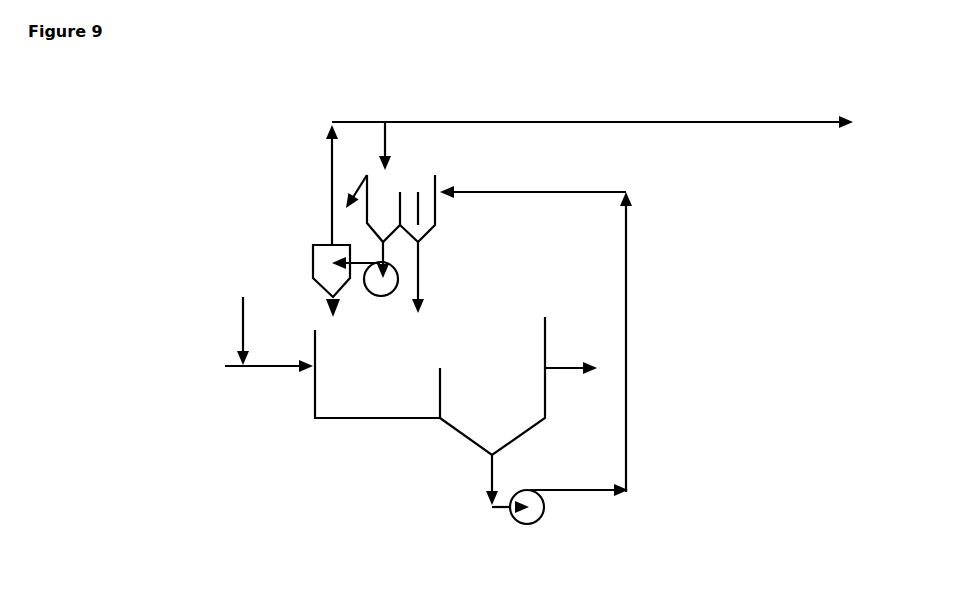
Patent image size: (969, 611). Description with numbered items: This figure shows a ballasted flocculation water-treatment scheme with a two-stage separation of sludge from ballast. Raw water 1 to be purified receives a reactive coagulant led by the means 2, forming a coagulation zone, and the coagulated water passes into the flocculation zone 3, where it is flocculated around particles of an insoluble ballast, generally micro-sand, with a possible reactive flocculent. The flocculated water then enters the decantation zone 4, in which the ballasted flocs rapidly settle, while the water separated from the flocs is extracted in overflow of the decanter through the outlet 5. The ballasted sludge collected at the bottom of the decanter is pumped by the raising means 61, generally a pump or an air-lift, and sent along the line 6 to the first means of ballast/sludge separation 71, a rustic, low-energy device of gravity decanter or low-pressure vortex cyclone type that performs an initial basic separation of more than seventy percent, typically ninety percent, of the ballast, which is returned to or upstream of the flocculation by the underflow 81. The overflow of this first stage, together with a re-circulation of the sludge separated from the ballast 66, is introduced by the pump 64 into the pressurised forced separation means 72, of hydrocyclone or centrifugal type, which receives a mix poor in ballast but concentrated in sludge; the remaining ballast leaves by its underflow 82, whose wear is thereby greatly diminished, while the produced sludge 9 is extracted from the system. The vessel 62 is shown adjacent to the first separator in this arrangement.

The raw water intake 1 is at (246, 391).
The coagulant feed means 2 is at (214, 324).
The flocculation zone 3 is at (377, 374).
The decantation zone 4 is at (492, 386).
The overflow outlet 5 is at (580, 345).
The recycle line 6 is at (570, 341).
The produced sludge 9 is at (592, 100).
The raising means 61 is at (533, 516).
The first separation vessel 62 is at (383, 192).
The pump 64 is at (398, 278).
The re-circulation of sludge 66 is at (385, 137).
The first means of ballast/sludge separation 71 is at (437, 207).
The second means of sludge/ballast separation 72 is at (313, 260).
The underflow 81 is at (422, 300).
The underflow of second means of separation 82 is at (334, 315).